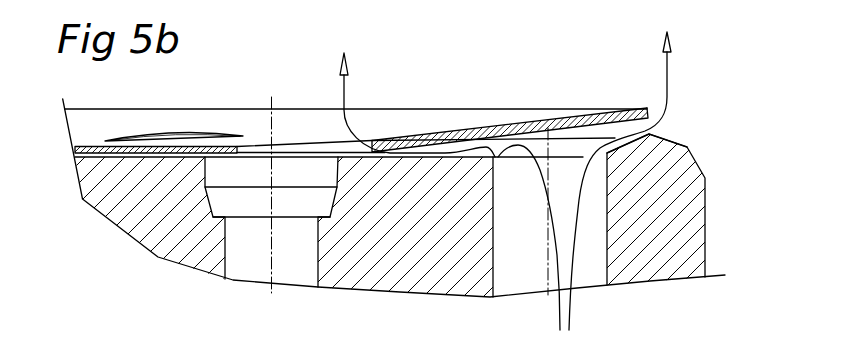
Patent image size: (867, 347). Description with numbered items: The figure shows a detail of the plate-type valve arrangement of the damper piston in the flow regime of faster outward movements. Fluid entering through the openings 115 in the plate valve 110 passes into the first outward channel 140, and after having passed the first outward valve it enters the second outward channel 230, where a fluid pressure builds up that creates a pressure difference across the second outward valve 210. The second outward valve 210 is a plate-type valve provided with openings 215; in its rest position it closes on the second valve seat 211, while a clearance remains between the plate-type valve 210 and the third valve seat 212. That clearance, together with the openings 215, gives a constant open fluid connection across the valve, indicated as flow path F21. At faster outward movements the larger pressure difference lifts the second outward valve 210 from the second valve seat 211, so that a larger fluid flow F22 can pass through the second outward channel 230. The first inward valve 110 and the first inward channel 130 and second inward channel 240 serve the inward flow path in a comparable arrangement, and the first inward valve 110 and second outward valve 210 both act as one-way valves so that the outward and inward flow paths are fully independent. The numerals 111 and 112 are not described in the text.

The first inward valve 110 is at (442, 103).
The second outward valve 210 is at (581, 117).
The sealing edge of outlet wall 111 is at (673, 125).
The second valve seat 211 is at (650, 134).
The free end portion of membrane 112 is at (509, 106).
The third valve seat 212 is at (492, 153).
The openings 115 is at (226, 90).
The openings 215 is at (253, 148).
The first inward channel 130 is at (656, 231).
The second outward channel 230 is at (590, 265).
The first outward channel 140 is at (267, 241).
The second inward channel 240 is at (252, 248).
The flow path F21 is at (344, 98).
The fluid flow F22 is at (667, 67).